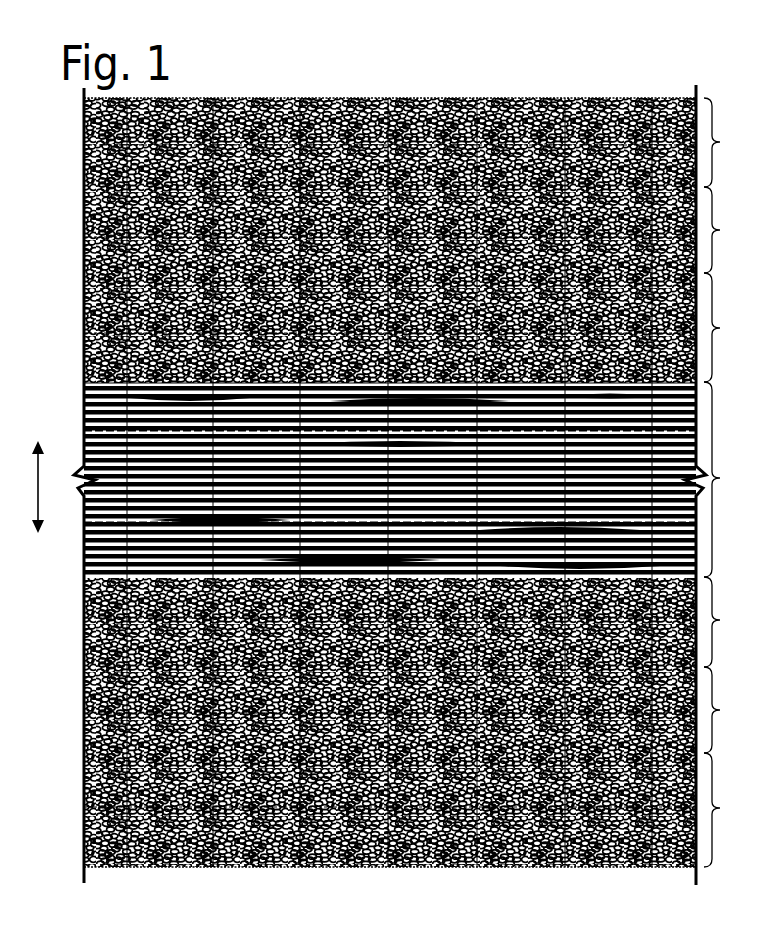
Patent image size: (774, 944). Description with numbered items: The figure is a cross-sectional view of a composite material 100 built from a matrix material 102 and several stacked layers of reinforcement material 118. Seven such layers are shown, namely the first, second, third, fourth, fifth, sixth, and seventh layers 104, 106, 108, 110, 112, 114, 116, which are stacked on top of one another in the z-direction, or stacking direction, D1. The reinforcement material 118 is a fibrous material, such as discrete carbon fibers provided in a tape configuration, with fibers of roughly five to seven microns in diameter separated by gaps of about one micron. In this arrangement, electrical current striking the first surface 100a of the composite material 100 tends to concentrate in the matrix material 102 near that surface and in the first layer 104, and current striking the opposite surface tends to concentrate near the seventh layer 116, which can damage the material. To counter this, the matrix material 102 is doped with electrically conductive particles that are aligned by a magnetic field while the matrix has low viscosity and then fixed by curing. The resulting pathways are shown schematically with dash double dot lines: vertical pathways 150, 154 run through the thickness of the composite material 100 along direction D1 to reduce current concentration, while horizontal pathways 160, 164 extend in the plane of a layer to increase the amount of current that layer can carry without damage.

The composite material 100 is at (234, 70).
The first surface 100a is at (268, 98).
The matrix material 102 is at (688, 99).
The first layer 104 is at (427, 142).
The second layer 106 is at (427, 230).
The third layer 108 is at (427, 328).
The fourth layer 110 is at (427, 479).
The fifth layer 112 is at (427, 622).
The sixth layer 114 is at (427, 710).
The seventh layer 116 is at (427, 810).
The reinforcement material 118 is at (97, 167).
The electrical pathway 150 is at (397, 135).
The electrical pathway 154 is at (560, 133).
The electrical pathway 160 is at (100, 352).
The electrical pathway 164 is at (118, 430).
The z-direction D1 is at (40, 478).